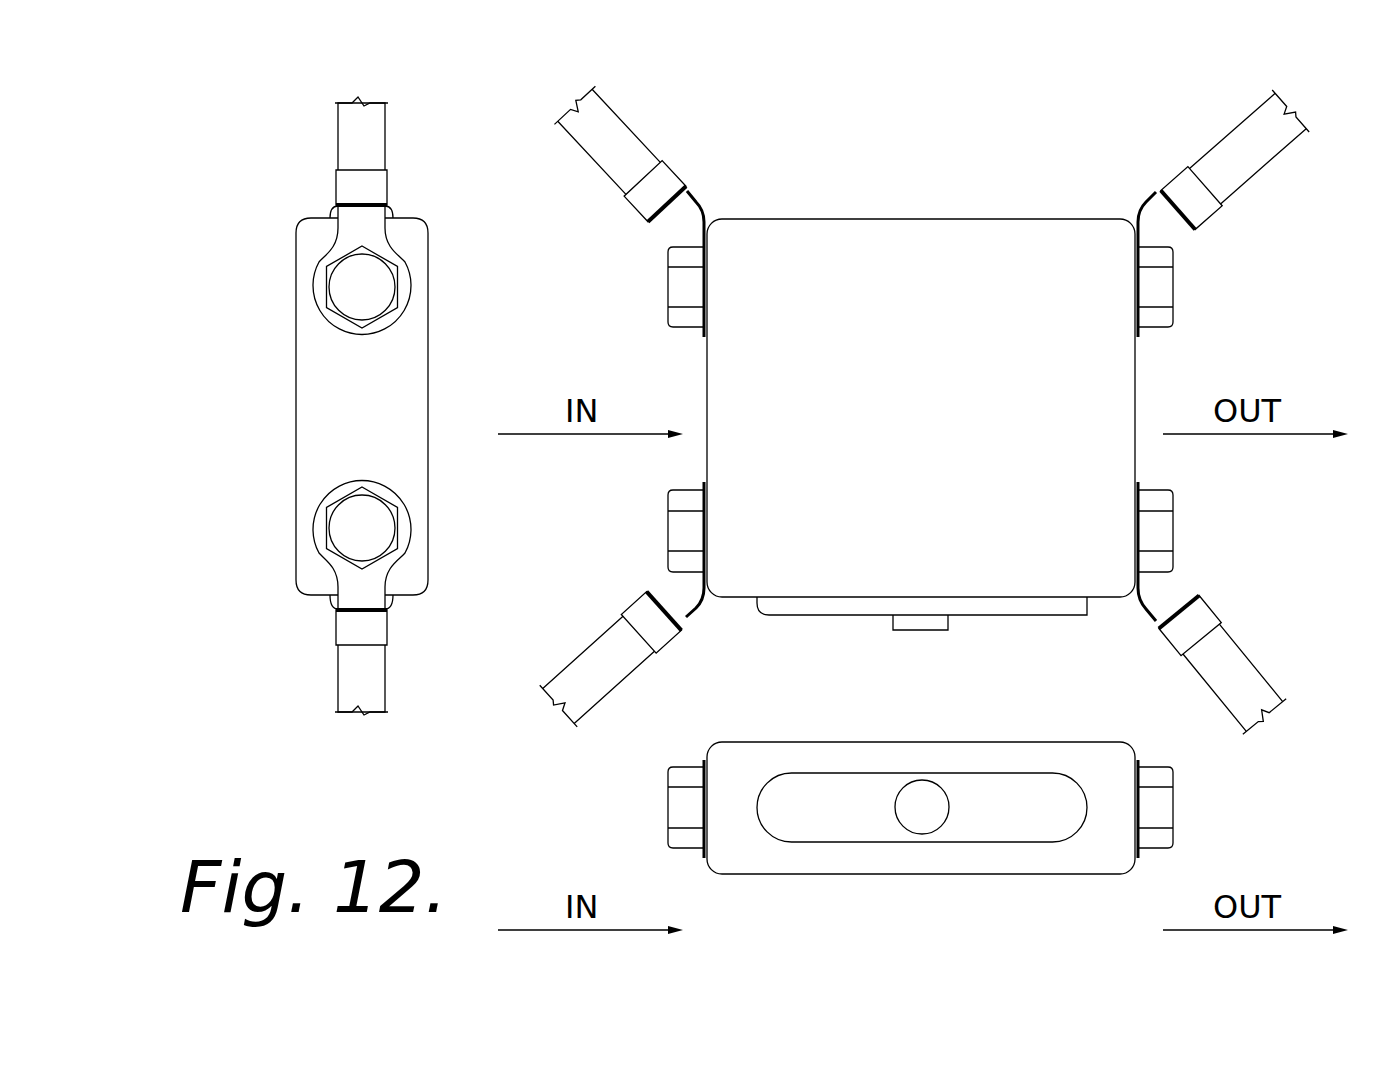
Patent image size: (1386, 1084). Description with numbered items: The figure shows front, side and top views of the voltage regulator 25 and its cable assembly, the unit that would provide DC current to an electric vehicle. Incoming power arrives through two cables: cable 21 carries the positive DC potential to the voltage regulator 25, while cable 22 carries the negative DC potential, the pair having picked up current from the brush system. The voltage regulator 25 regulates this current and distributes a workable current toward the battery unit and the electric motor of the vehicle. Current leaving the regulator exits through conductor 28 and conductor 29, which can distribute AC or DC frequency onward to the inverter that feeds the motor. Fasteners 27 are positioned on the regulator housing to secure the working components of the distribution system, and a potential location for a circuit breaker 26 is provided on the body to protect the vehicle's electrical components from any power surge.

The cable 21 is at (598, 636).
The cable 22 is at (613, 103).
The voltage regulator 25 is at (921, 878).
The circuit breaker location 26 is at (925, 780).
The fasteners 27 is at (1175, 842).
The conductor 28 is at (1217, 610).
The conductor 29 is at (1258, 103).